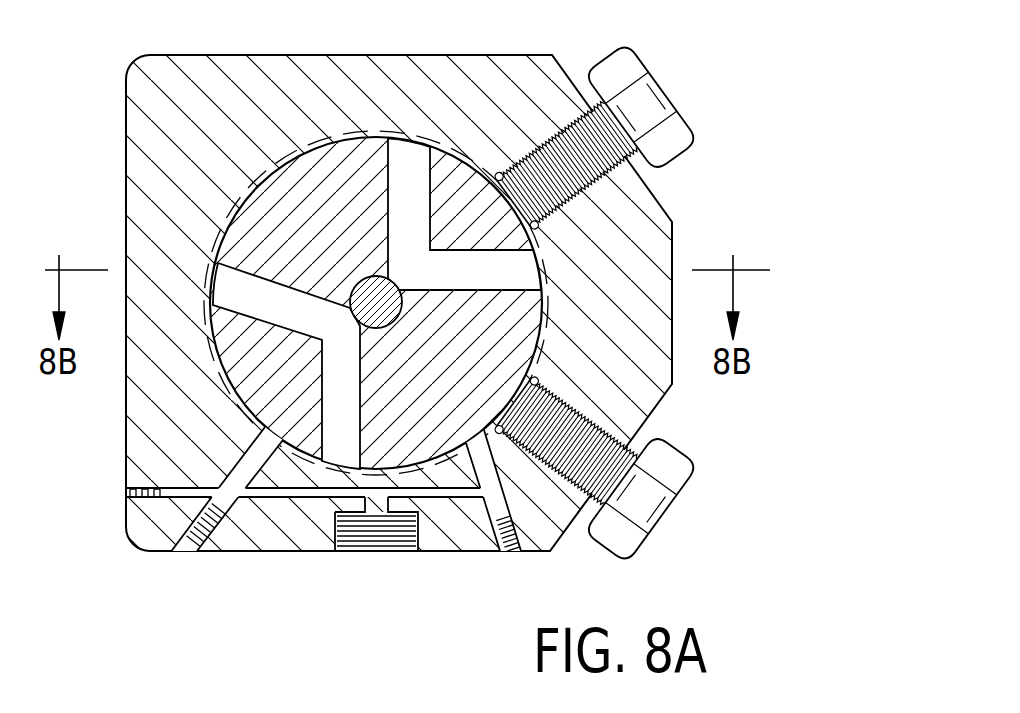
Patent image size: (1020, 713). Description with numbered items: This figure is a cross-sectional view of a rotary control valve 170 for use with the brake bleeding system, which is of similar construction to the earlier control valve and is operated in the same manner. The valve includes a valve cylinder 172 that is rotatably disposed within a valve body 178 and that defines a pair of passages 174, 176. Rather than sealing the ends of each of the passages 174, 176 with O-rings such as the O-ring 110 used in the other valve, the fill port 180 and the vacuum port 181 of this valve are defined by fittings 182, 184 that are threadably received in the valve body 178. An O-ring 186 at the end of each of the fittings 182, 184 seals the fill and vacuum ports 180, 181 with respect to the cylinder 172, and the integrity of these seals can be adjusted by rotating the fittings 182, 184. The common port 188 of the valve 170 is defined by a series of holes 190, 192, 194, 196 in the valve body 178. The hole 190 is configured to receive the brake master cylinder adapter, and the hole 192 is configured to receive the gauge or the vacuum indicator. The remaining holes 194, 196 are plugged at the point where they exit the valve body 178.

The O-ring 110 is at (434, 158).
The rotary control valve 170 is at (788, 111).
The valve cylinder 172 is at (342, 234).
The passage 174 is at (260, 312).
The passage 176 is at (427, 286).
The valve body 178 is at (263, 127).
The fill port 180 is at (673, 88).
The vacuum port 181 is at (670, 521).
The fitting 182 is at (677, 150).
The fitting 184 is at (679, 457).
The O-ring 186 is at (532, 231).
The common port 188 is at (387, 575).
The hole 190 is at (358, 538).
The hole 192 is at (167, 497).
The hole 194 is at (221, 518).
The hole 196 is at (497, 513).